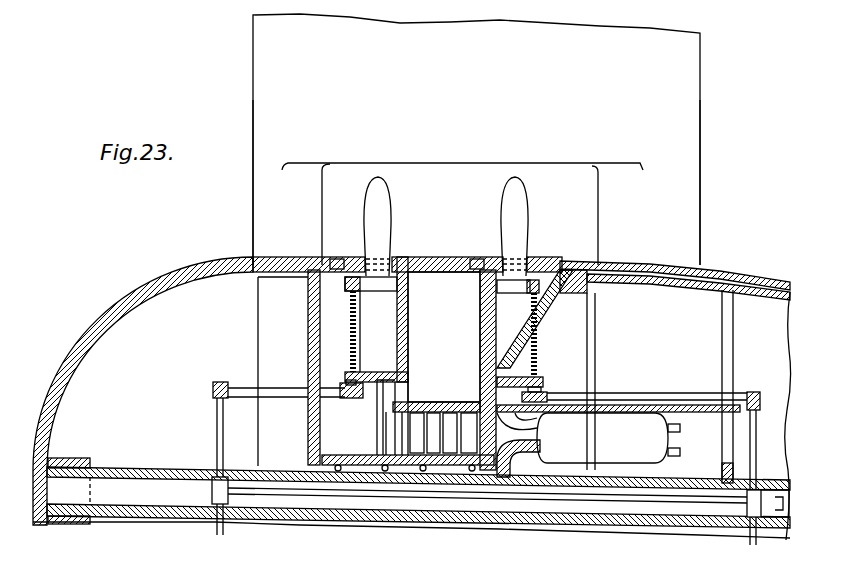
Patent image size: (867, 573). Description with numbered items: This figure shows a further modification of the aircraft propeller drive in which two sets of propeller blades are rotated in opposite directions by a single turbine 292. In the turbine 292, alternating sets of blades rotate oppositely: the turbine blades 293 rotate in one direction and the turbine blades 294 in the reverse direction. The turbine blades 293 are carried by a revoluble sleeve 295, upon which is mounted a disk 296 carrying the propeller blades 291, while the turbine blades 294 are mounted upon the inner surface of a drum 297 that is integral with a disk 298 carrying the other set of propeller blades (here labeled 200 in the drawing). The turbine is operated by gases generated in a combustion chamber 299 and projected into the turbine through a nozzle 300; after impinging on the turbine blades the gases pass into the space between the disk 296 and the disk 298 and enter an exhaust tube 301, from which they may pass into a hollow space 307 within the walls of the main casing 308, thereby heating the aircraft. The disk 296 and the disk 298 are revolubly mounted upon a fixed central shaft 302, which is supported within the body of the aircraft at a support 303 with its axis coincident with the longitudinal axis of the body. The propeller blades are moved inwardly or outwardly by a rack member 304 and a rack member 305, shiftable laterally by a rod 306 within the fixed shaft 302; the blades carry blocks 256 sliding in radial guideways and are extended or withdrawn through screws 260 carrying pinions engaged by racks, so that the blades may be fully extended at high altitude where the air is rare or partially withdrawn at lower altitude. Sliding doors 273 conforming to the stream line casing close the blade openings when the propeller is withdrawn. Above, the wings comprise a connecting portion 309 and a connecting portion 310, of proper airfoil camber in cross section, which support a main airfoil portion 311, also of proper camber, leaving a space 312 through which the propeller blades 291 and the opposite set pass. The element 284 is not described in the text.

The main airfoil portion 311 is at (535, 12).
The space 312 is at (458, 178).
The connecting portion 309 is at (253, 197).
The connecting portion 310 is at (684, 199).
The lamp bulb 200 is at (383, 214).
The blades 291 is at (520, 220).
The sliding doors 273 is at (399, 263).
The main casing 308 is at (716, 272).
The hollow space 307 is at (688, 283).
The block 256 is at (364, 292).
The screw 260 is at (357, 322).
The disk 298 is at (410, 302).
The disk 296 is at (490, 330).
The drum 297 is at (410, 400).
The turbine 292 is at (442, 395).
The turbine blades 293 is at (426, 405).
The rack member 304 is at (334, 386).
The turbine blades 294 is at (432, 431).
The exhaust tube 301 is at (541, 345).
The rack member 305 is at (548, 393).
The nozzle 300 is at (540, 422).
The combustion chamber 299 is at (608, 438).
The elbow conduit 284 is at (467, 433).
The support 303 is at (80, 458).
The fixed central shaft 302 is at (155, 468).
The rod 306 is at (352, 497).
The revoluble sleeve 295 is at (458, 483).